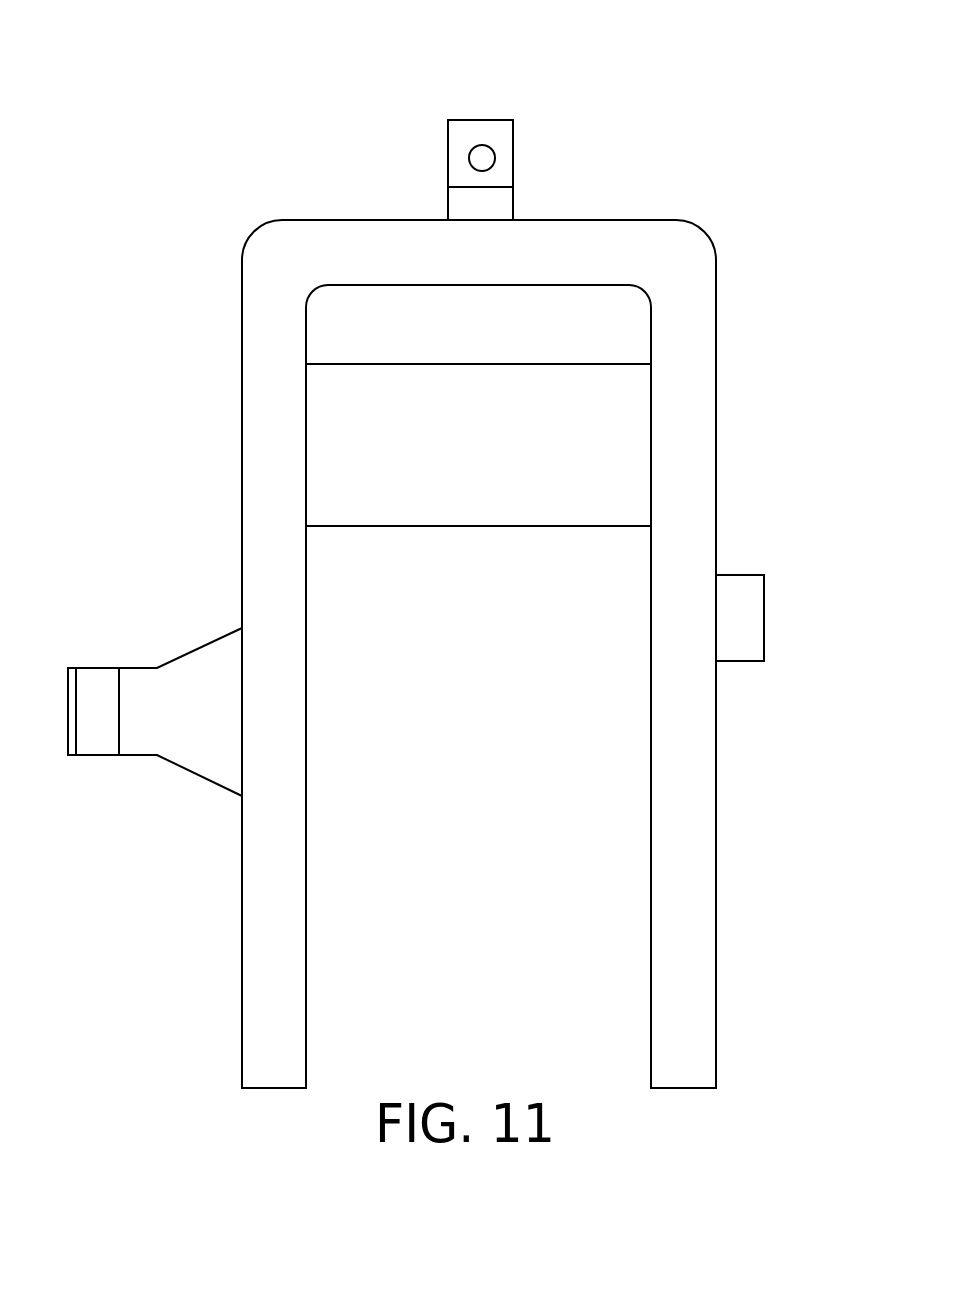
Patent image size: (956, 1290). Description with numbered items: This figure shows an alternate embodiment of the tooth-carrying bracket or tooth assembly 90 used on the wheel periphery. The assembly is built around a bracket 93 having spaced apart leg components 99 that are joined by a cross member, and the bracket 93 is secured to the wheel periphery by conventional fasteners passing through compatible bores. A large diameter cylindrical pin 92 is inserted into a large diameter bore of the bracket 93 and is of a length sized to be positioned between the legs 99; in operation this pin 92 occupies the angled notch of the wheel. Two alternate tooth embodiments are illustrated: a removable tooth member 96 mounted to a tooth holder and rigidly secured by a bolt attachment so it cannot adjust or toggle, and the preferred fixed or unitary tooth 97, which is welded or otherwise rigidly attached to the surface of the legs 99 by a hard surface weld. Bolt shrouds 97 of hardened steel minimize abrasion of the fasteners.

The tooth assembly 90 is at (708, 235).
The pin 92 is at (360, 526).
The bracket 93 is at (716, 450).
The removable tooth member 96 is at (482, 120).
The fixed tooth 97 is at (183, 655).
The leg components 99 is at (242, 1010).